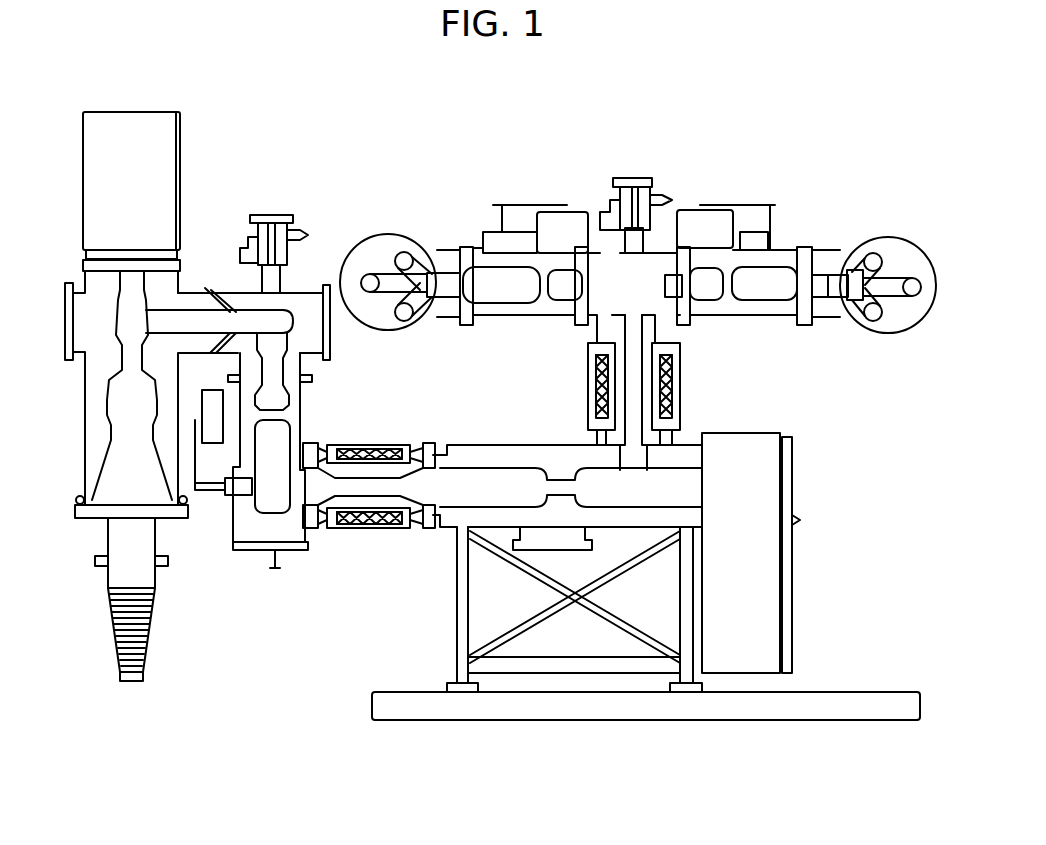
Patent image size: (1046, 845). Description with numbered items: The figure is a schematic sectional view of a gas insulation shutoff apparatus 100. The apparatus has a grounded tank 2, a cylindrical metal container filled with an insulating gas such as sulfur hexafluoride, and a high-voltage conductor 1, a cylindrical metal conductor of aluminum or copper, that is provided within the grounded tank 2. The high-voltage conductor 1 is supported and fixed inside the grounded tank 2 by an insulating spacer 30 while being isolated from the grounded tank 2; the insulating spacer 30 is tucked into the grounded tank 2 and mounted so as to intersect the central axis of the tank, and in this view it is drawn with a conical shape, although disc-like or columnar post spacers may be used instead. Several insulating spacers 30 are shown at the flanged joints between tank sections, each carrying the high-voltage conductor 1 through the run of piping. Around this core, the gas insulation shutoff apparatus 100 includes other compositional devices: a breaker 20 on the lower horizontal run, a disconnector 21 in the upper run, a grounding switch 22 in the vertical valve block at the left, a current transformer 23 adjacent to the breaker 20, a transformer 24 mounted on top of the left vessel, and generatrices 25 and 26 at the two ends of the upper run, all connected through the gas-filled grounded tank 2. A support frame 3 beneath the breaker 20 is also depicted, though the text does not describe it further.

The gas insulation shutoff apparatus 100 is at (477, 120).
The high-voltage conductor 1 is at (362, 487).
The grounded tank 2 is at (507, 317).
The support frame 3 is at (428, 513).
The breaker 20 is at (503, 445).
The disconnector 21 is at (733, 307).
The grounding switch 22 is at (240, 527).
The current transformer 23 is at (352, 445).
The transformer 24 is at (146, 120).
The generatrix 25 is at (386, 232).
The generatrix 26 is at (907, 238).
The insulating spacer 30 is at (217, 293).